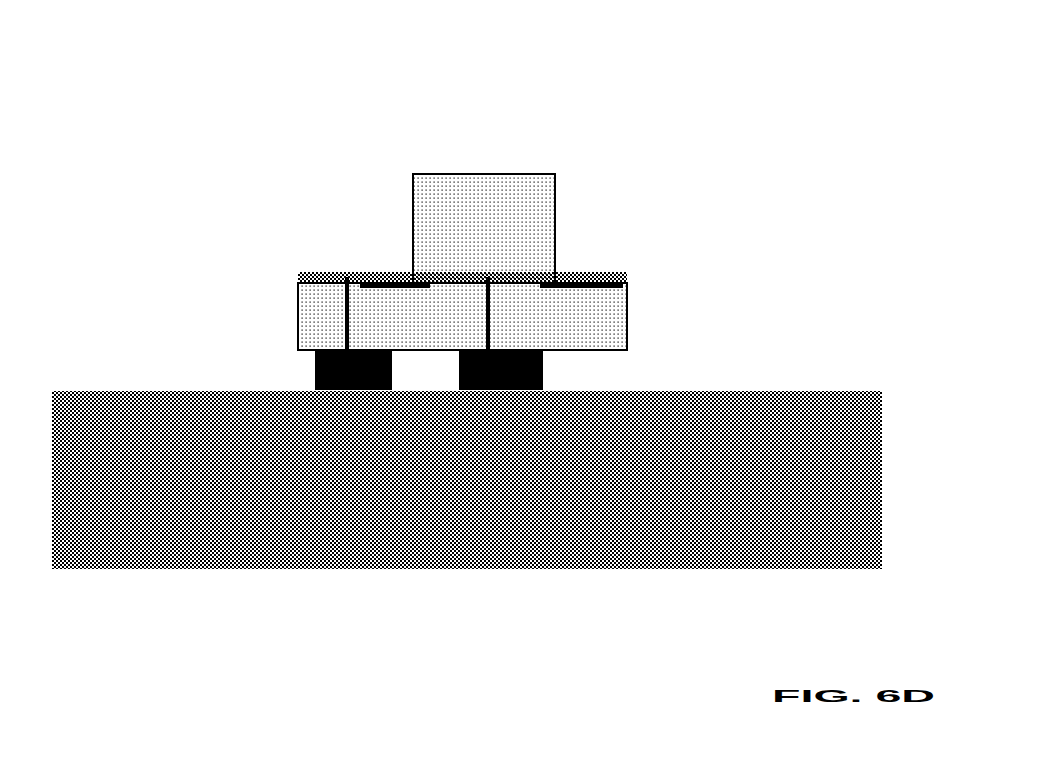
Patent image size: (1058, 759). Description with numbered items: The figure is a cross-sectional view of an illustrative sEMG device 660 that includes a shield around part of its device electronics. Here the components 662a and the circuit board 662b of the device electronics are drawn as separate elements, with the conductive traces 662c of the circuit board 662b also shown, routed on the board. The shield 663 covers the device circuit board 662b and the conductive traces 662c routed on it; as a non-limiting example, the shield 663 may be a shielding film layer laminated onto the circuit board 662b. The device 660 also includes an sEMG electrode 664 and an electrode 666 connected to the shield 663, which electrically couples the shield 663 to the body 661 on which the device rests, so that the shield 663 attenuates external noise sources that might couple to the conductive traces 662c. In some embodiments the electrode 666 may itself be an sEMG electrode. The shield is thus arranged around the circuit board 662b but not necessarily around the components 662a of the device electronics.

The sEMG device 660 is at (74, 38).
The body 661 is at (798, 474).
The components 662a is at (508, 212).
The circuit board 662b is at (785, 212).
The conductive traces 662c is at (590, 280).
The shield 663 is at (313, 146).
The sEMG electrode 664 is at (785, 326).
The electrode 666 is at (315, 370).